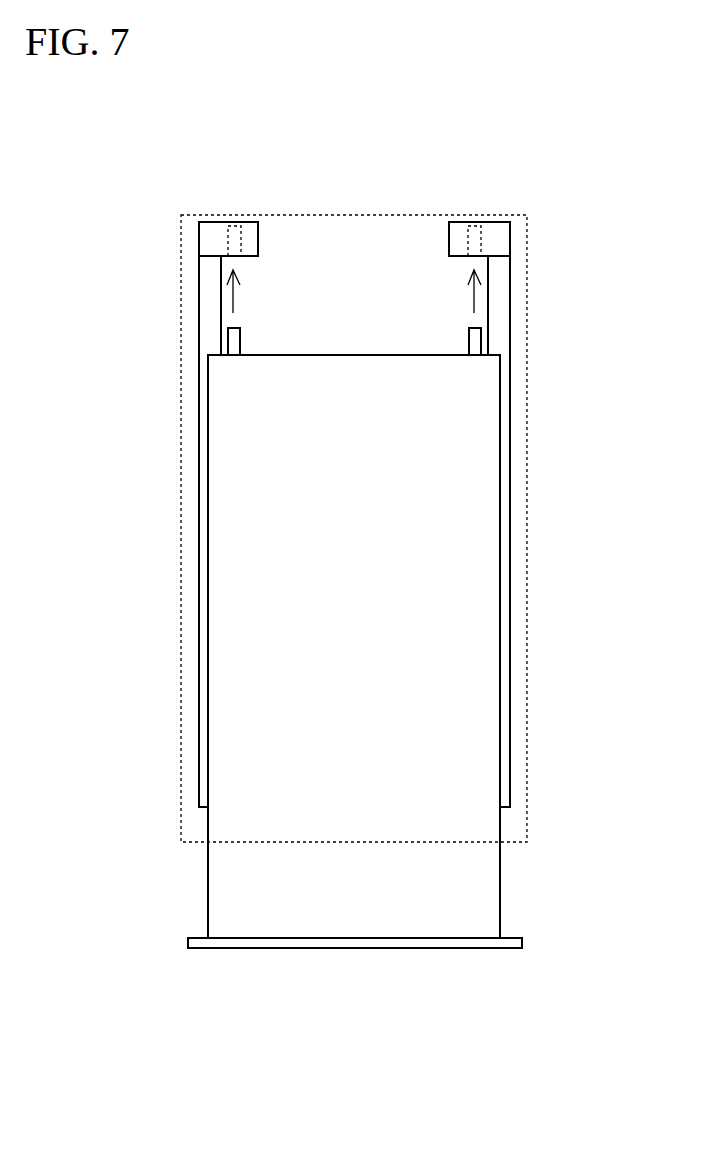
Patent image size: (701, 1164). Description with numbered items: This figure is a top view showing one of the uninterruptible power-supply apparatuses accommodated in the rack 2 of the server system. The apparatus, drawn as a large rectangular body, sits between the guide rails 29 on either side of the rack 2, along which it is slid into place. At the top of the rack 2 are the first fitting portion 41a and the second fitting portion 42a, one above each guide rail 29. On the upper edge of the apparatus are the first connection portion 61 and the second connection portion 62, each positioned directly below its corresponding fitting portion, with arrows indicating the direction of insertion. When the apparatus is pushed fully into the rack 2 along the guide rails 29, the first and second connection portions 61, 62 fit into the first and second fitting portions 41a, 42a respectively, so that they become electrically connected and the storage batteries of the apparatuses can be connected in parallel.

The rack 2 is at (354, 213).
The guide rails 29 is at (198, 332).
The first fitting portion 41a is at (229, 220).
The second fitting portion 42a is at (474, 220).
The first connection portion 61 is at (242, 340).
The second connection portion 62 is at (468, 340).